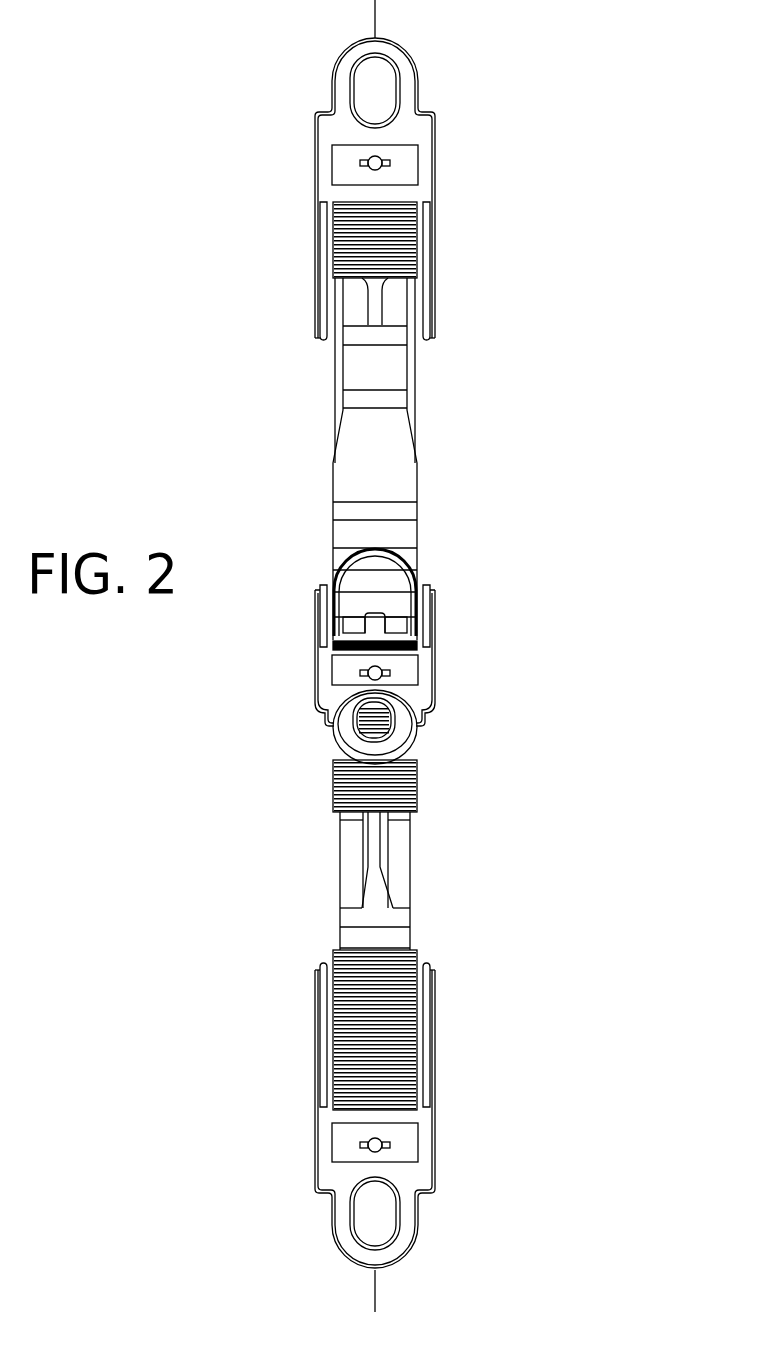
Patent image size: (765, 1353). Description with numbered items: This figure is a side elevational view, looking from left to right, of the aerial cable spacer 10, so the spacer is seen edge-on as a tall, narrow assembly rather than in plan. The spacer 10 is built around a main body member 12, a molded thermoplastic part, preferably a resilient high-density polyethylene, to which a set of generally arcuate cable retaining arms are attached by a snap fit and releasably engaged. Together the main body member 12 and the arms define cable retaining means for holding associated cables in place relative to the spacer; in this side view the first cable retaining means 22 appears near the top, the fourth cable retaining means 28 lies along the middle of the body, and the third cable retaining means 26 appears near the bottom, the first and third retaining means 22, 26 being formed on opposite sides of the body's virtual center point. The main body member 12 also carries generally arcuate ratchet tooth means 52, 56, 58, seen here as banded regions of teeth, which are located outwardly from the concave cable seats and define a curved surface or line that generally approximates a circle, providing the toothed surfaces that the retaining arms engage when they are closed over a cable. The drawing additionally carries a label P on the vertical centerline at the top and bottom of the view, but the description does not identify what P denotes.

The aerial cable spacer 10 is at (297, 1208).
The main body member 12 is at (418, 497).
The first cable retaining means 22 is at (455, 223).
The third cable retaining means 26 is at (455, 1077).
The fourth cable retaining means 28 is at (454, 655).
The ratchet tooth means 52 is at (343, 238).
The ratchet tooth means 56 is at (340, 1032).
The ratchet tooth means 58 is at (334, 787).
The axis plane P is at (376, 22).